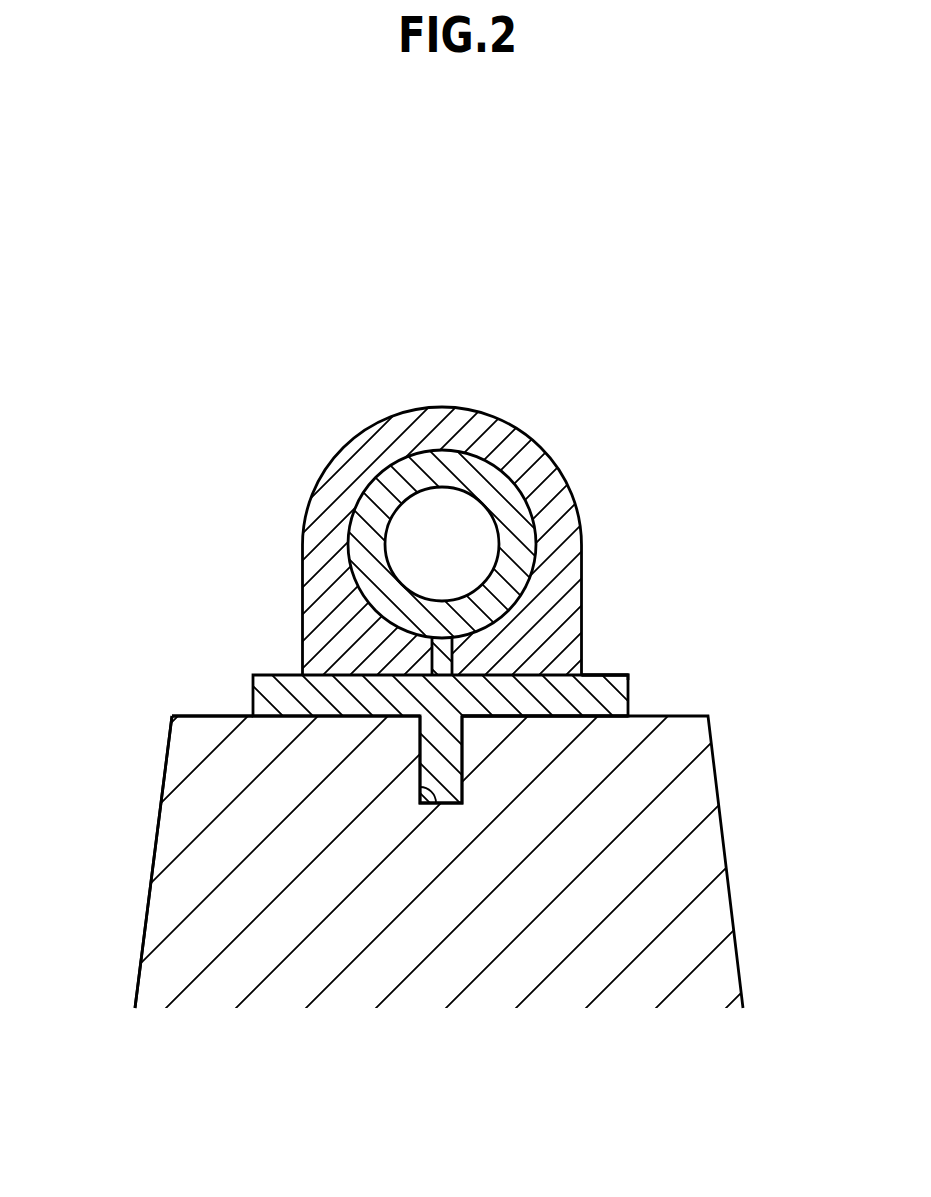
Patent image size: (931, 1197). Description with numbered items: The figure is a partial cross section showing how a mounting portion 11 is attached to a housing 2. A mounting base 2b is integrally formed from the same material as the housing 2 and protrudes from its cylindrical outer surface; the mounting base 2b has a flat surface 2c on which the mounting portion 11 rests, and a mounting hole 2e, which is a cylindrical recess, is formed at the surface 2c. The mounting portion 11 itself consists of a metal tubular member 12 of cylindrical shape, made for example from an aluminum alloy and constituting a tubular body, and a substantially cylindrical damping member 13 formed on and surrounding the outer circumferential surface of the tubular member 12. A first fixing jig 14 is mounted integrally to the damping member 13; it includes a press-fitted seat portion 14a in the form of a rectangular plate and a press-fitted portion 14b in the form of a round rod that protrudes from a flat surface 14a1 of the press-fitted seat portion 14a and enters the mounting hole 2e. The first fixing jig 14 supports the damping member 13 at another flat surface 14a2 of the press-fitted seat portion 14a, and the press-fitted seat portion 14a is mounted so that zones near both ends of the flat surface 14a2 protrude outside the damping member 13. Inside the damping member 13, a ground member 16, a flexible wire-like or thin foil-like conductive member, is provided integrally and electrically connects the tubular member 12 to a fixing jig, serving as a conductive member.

The mounting portion 11 is at (387, 411).
The tubular member 12 is at (372, 483).
The damping member 13 is at (302, 548).
The first fixing jig 14 is at (253, 692).
The press-fitted seat portion 14a is at (630, 683).
The flat surface 14a1 is at (617, 716).
The another flat surface 14a2 is at (592, 675).
The press-fitted portion 14b is at (462, 760).
The ground member 16 is at (428, 662).
The housing 2 is at (139, 975).
The mounting base 2b is at (158, 807).
The flat surface 2c is at (195, 716).
The mounting hole 2e is at (435, 805).